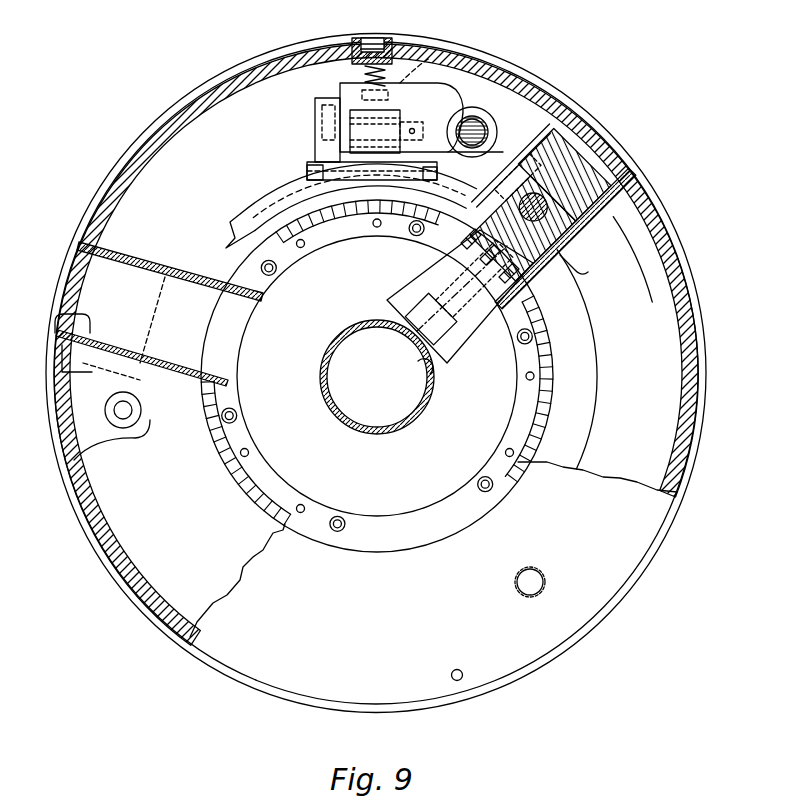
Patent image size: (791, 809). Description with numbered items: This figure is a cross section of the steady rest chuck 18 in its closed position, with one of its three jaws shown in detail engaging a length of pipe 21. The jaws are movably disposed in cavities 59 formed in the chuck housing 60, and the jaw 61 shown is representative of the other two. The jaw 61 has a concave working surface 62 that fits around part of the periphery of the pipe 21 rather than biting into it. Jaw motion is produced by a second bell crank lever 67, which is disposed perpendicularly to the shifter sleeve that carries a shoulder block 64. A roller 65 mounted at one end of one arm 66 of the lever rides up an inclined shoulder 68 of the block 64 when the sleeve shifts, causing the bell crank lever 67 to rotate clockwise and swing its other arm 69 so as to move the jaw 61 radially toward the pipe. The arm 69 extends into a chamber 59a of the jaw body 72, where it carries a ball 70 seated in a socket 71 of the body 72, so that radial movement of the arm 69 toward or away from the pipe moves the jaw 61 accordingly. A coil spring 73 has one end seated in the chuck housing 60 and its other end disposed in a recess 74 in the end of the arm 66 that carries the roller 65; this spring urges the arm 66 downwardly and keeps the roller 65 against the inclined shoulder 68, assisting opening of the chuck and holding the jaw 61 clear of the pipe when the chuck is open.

The steady rest chuck 18 is at (730, 306).
The pipe 21 is at (347, 420).
The cavities 59 is at (55, 320).
The chamber 59a is at (580, 216).
The chuck housing 60 is at (680, 248).
The jaw 61 is at (486, 325).
The concave working surface 62 is at (429, 375).
The shoulder block 64 is at (318, 178).
The roller 65 is at (358, 124).
The arm 66 is at (437, 92).
The second bell crank lever 67 is at (454, 120).
The inclined shoulder 68 is at (350, 158).
The arm 69 is at (503, 170).
The ball 70 is at (585, 250).
The socket 71 is at (576, 271).
The jaw body 72 is at (538, 283).
The coil spring 73 is at (388, 42).
The recess 74 is at (395, 88).